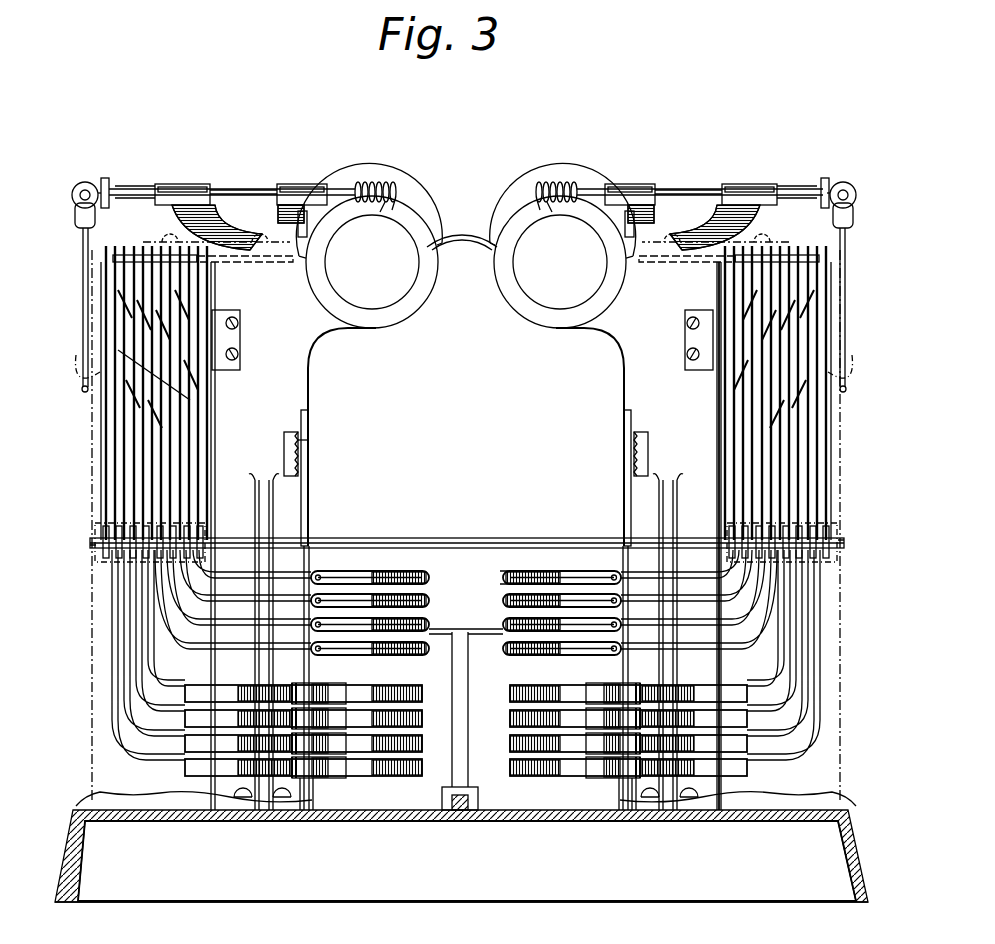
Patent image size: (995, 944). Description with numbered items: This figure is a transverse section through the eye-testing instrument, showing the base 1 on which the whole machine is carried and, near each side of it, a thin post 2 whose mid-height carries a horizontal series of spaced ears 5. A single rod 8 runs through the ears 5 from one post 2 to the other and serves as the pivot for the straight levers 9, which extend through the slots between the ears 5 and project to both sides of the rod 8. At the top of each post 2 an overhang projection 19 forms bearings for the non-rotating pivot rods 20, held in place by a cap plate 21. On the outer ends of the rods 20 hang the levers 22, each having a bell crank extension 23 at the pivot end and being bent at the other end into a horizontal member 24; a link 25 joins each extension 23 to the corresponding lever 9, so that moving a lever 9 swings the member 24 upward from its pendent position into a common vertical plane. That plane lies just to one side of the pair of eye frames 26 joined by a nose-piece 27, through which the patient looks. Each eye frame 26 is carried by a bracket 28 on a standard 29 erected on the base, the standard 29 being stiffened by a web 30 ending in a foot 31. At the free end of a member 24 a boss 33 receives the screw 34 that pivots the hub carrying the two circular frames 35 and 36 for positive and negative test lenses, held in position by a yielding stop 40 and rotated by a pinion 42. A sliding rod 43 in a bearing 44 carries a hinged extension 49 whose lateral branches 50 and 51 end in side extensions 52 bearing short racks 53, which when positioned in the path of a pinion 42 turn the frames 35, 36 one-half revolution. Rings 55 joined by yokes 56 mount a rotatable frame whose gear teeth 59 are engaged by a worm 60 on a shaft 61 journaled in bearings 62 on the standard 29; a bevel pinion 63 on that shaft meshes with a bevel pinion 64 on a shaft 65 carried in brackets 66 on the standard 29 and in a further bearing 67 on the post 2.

The base 1 is at (380, 890).
The post 2 is at (90, 795).
The ears 5 is at (108, 538).
The rod 8 is at (225, 538).
The levers 9 is at (110, 558).
The overhang projection 19 is at (262, 282).
The rods 20 is at (250, 263).
The cap plate 21 is at (170, 185).
The levers 22 is at (200, 385).
The bell crank extension 23 is at (719, 330).
The horizontal member 24 is at (668, 530).
The link 25 is at (104, 470).
The eye frames 26 is at (440, 235).
The nose-piece 27 is at (478, 252).
The bracket 28 is at (345, 335).
The standard 29 is at (312, 400).
The web 30 is at (262, 663).
The foot 31 is at (296, 816).
The boss 33 is at (318, 688).
The screw 34 is at (645, 818).
The circular frame 35 is at (196, 768).
The circular frame 36 is at (390, 777).
The stop 40 is at (150, 730).
The pinion 42 is at (318, 787).
The rod 43 is at (460, 813).
The bearing 44 is at (445, 812).
The extension 49 is at (466, 700).
The lateral branch 50 is at (312, 520).
The lateral branch 51 is at (620, 506).
The side extension 52 is at (310, 441).
The rack 53 is at (284, 450).
The rings 55 is at (375, 570).
The yokes 56 is at (322, 574).
The gear teeth 59 is at (508, 570).
The worm 60 is at (372, 184).
The shaft 61 is at (245, 188).
The journal bearings 62 is at (195, 183).
The bevel pinion 63 is at (110, 180).
The bevel pinion 64 is at (88, 182).
The shaft 65 is at (218, 356).
The brackets 66 is at (180, 262).
The bearing 67 is at (195, 398).